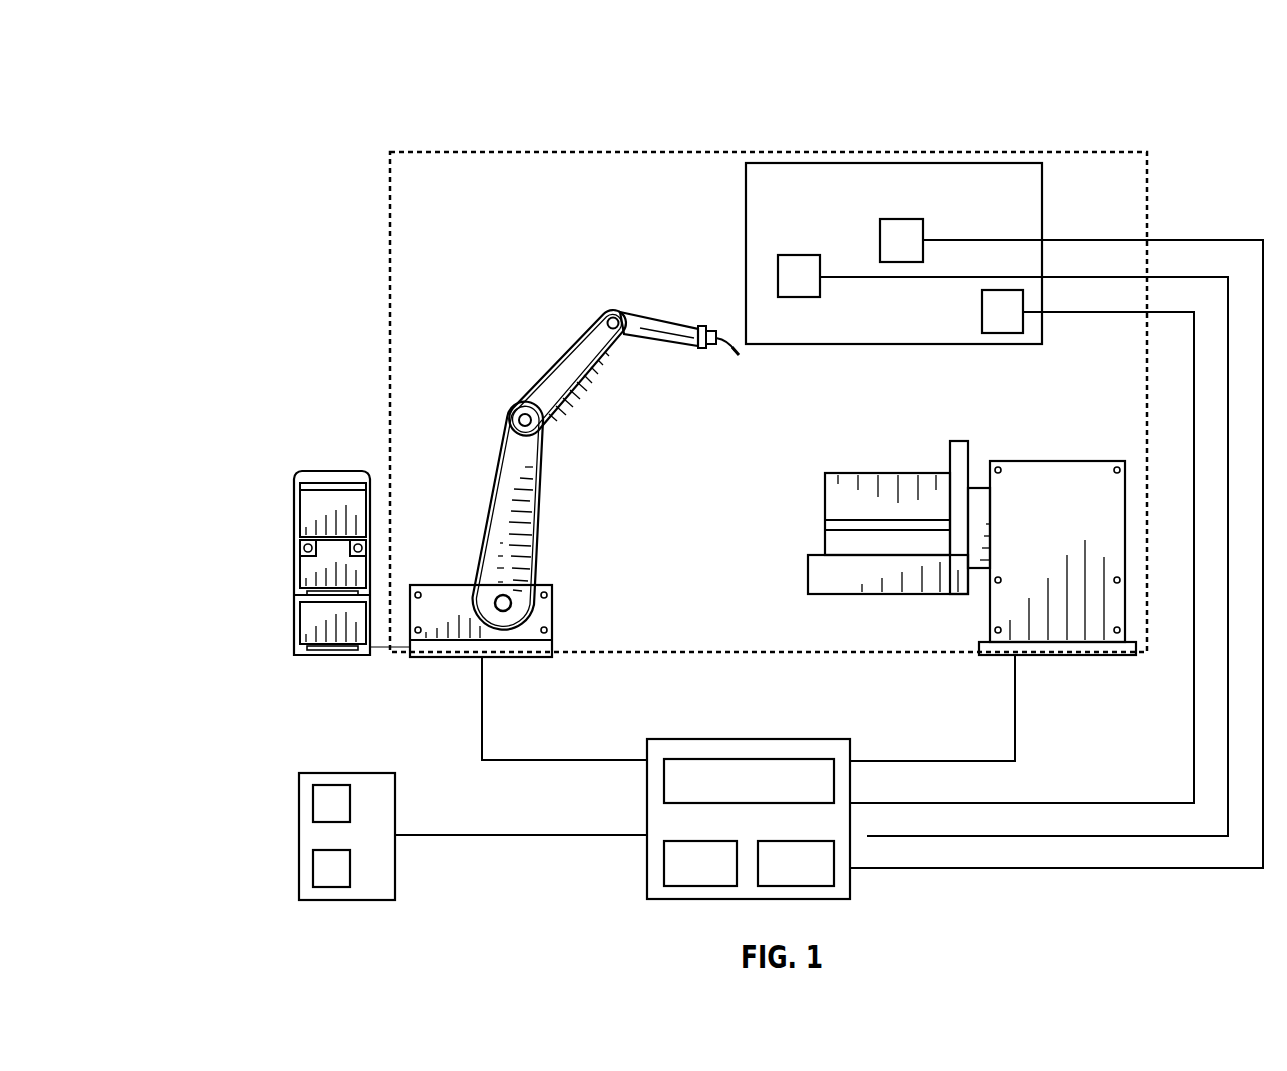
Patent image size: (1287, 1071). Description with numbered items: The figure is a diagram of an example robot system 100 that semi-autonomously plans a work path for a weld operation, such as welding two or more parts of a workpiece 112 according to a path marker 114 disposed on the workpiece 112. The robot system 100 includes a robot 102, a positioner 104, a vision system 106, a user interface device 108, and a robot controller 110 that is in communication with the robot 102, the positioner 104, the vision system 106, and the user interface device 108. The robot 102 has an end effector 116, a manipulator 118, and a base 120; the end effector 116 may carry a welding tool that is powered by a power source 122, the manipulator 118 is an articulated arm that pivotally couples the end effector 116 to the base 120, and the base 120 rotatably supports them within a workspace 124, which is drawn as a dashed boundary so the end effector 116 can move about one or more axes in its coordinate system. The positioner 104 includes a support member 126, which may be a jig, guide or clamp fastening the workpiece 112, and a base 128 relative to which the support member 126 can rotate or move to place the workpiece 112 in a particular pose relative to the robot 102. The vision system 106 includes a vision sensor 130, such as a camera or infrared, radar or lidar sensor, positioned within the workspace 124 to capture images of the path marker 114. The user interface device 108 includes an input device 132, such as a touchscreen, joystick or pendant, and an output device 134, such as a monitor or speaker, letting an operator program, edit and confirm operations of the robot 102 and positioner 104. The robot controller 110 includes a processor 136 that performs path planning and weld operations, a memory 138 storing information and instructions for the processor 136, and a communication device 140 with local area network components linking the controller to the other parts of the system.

The robot system 100 is at (226, 92).
The robot 102 is at (503, 358).
The positioner 104 is at (1035, 442).
The vision system 106 is at (851, 163).
The user interface device 108 is at (368, 773).
The robot controller 110 is at (780, 739).
The workpiece 112 is at (825, 478).
The path marker 114 is at (825, 528).
The end effector 116 is at (723, 347).
The manipulator 118 is at (510, 467).
The base 120 is at (547, 614).
The power source 122 is at (307, 572).
The workspace 124 is at (390, 228).
The support member 126 is at (808, 583).
The base 128 is at (1058, 630).
The vision sensor 130 is at (790, 268).
The input device 132 is at (320, 805).
The output device 134 is at (320, 865).
The processor 136 is at (665, 785).
The memory 138 is at (665, 875).
The communication device 140 is at (825, 875).